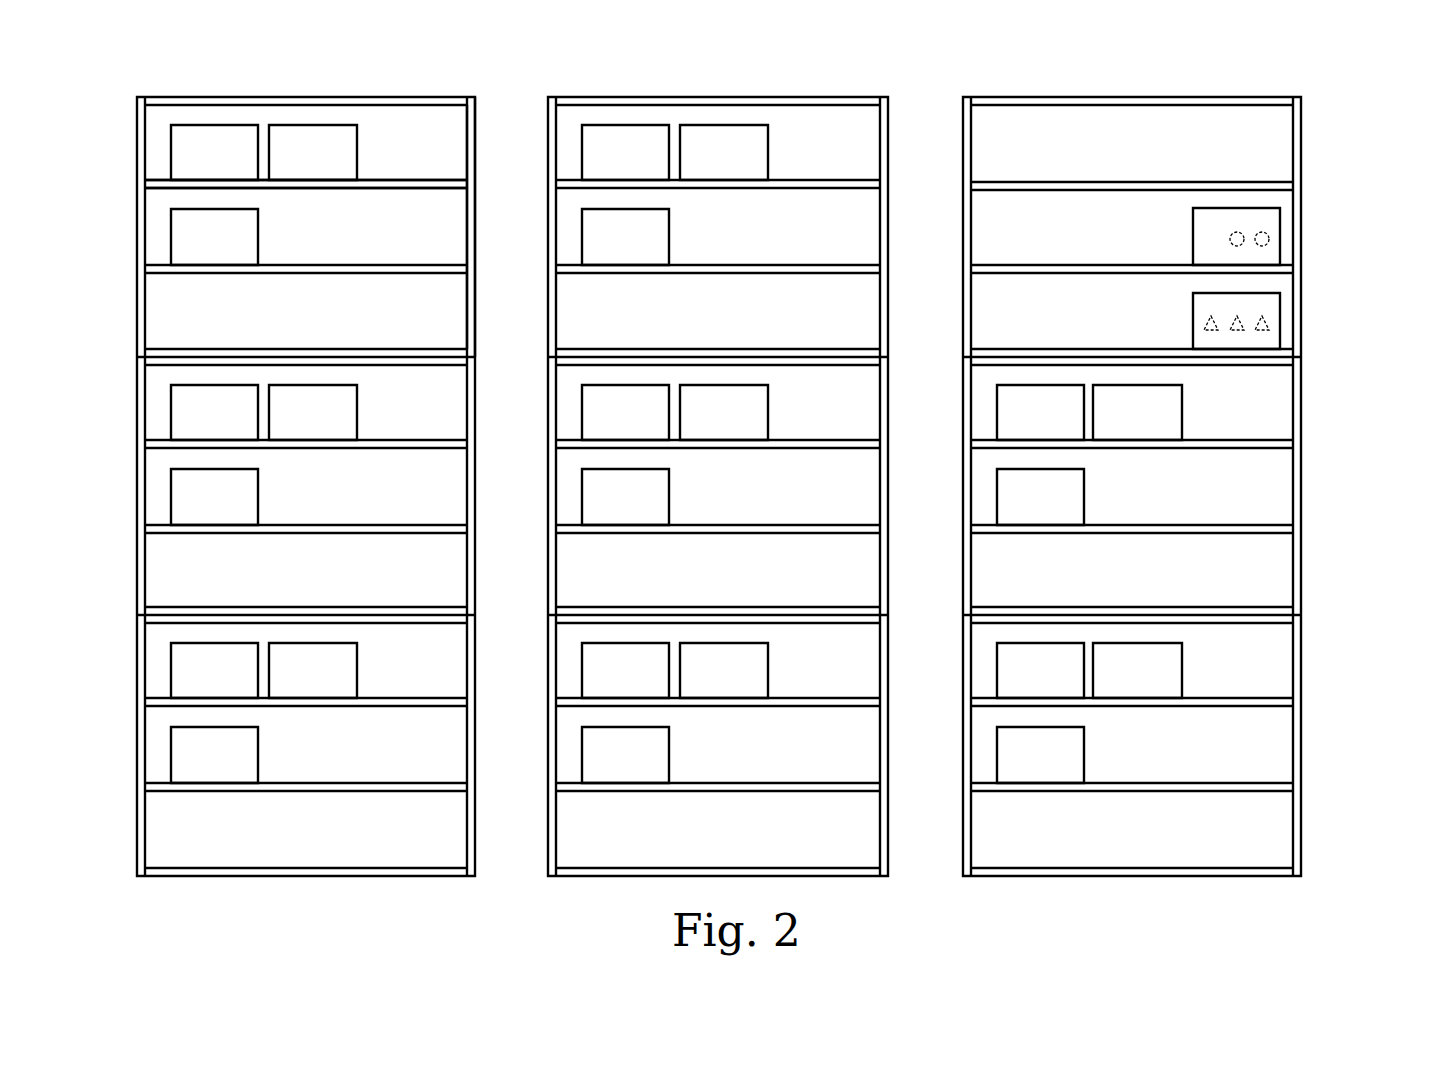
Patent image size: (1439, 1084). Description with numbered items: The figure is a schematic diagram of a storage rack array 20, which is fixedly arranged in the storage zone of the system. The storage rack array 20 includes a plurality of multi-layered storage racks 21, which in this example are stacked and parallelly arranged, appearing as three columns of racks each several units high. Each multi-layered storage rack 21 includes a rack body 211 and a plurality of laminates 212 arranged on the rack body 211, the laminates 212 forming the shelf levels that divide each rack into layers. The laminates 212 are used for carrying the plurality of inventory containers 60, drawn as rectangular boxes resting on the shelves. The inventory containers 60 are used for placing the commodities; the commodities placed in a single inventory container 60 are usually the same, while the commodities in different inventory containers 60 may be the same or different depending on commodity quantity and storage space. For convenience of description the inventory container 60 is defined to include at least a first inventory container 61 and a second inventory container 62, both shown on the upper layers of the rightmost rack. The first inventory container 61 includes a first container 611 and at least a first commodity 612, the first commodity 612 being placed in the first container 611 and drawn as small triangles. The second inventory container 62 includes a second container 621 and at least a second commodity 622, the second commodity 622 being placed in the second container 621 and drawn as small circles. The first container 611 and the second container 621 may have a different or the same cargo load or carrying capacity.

The storage rack array 20 is at (132, 92).
The multi-layered storage rack 21 is at (736, 495).
The rack body 211 is at (474, 150).
The laminate 212 is at (430, 186).
The inventory container 60 is at (312, 140).
The first inventory container 61 is at (1308, 303).
The first container 611 is at (1262, 305).
The first commodity 612 is at (1262, 323).
The second inventory container 62 is at (1308, 217).
The second container 621 is at (1265, 215).
The second commodity 622 is at (1262, 236).